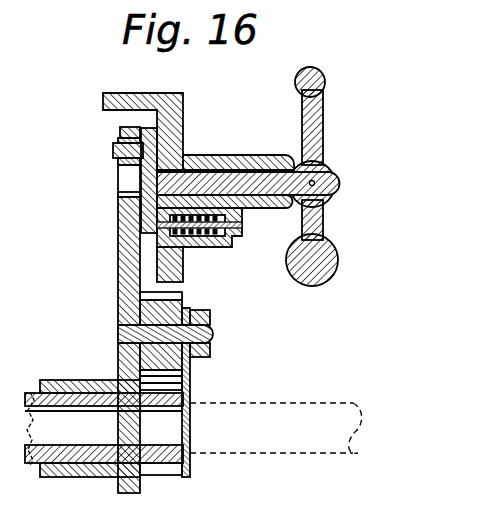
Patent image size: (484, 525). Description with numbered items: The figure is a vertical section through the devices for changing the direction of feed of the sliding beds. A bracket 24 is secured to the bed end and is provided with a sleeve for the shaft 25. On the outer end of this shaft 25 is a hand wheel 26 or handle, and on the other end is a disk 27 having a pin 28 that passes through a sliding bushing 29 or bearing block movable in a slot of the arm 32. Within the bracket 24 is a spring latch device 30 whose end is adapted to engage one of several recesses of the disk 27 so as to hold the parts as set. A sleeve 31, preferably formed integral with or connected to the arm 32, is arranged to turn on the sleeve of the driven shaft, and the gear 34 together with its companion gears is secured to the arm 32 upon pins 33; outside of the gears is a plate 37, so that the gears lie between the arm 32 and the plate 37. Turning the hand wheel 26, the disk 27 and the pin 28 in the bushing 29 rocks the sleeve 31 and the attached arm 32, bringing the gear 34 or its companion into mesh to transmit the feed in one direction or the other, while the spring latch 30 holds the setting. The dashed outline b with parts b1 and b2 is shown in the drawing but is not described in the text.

The bracket 24 is at (184, 117).
The shaft 25 is at (252, 192).
The hand wheel 26 is at (324, 127).
The disk 27 is at (120, 192).
The pin 28 is at (112, 152).
The sliding bushing 29 is at (121, 164).
The spring latch device 30 is at (199, 246).
The sleeve 31 is at (83, 390).
The arm 32 is at (118, 277).
The pins 33 is at (118, 333).
The gear 34 is at (183, 295).
The plate 37 is at (207, 392).
The pipe b is at (232, 466).
The pipe coupling b1 is at (163, 478).
The pipe wall b2 is at (78, 397).